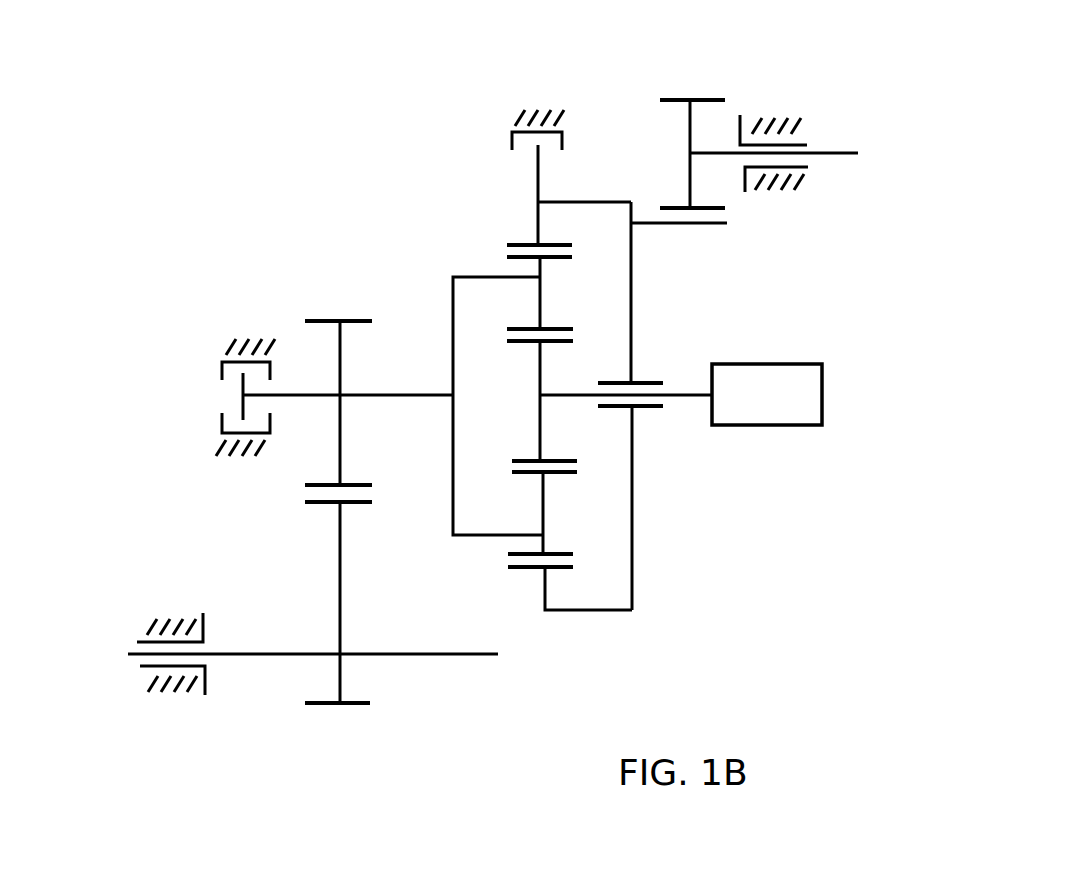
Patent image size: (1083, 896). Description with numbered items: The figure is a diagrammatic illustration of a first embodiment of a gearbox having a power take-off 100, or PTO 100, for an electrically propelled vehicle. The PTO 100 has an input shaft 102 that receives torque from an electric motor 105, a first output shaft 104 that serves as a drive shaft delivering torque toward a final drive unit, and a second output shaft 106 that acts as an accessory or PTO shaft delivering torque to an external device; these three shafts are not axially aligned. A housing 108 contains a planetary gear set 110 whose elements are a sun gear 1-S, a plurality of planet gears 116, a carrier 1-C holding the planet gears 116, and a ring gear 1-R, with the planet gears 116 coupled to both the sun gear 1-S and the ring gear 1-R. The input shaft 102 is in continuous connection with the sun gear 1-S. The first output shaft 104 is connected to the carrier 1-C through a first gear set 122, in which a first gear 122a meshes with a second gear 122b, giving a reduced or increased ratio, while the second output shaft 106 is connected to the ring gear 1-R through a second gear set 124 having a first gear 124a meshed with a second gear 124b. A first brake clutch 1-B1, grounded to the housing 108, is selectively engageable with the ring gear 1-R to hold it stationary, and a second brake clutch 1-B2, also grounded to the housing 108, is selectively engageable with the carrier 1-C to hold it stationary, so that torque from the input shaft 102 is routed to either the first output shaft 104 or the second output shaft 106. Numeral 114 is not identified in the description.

The power take-off 100 is at (224, 213).
The input shaft 102 is at (682, 393).
The first output shaft 104 is at (427, 654).
The electric motor 105 is at (767, 394).
The second output shaft 106 is at (847, 153).
The housing 108 is at (776, 118).
The planetary gear set 110 is at (655, 611).
The electric machine 114 is at (288, 8).
The planet gears 116 is at (543, 313).
The first gear set 122 is at (250, 570).
The first gear 122a is at (340, 452).
The second gear 122b is at (340, 606).
The second gear set 124 is at (666, 147).
The first gear 124a is at (696, 100).
The second gear 124b is at (727, 223).
The first brake clutch 1-B1 is at (498, 117).
The second brake clutch 1-B2 is at (201, 392).
The carrier 1-C is at (453, 300).
The ring gear 1-R is at (537, 213).
The sun gear 1-S is at (540, 427).